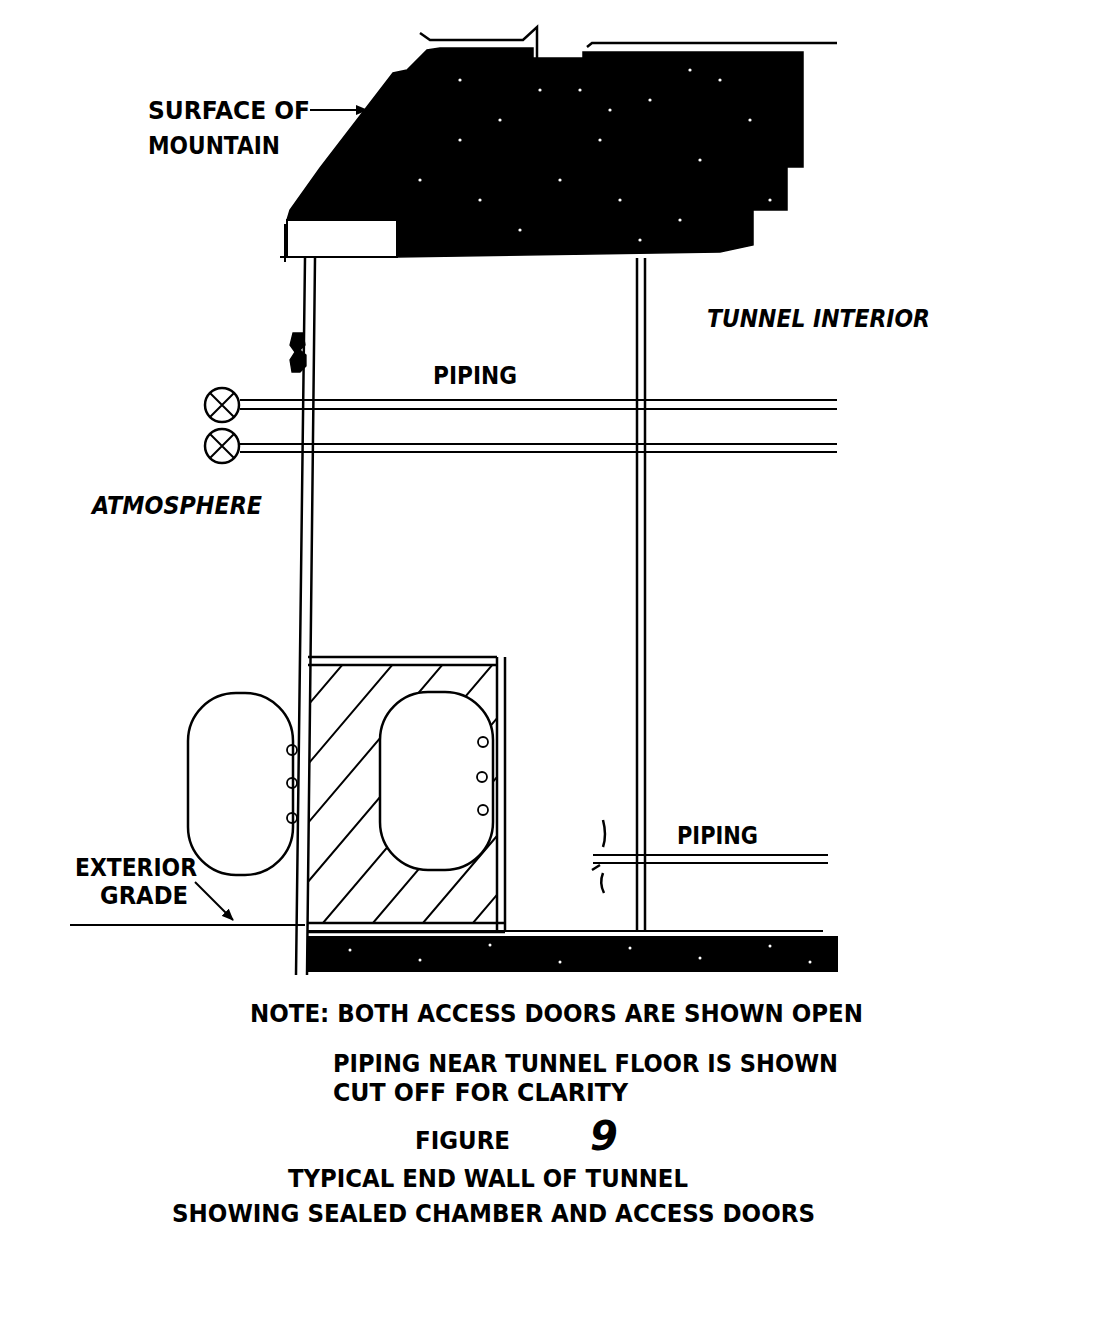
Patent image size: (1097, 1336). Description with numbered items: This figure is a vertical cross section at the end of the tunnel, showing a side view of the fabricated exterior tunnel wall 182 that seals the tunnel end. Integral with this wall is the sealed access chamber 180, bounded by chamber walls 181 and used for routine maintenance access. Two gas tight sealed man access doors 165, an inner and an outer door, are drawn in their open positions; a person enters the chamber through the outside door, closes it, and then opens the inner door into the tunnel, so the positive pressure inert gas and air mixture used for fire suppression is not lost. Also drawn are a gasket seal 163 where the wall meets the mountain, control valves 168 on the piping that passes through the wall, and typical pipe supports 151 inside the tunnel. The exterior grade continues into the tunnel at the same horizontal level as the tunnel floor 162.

The control valves 168 is at (203, 437).
The gasket seal 163 is at (318, 352).
The fabricated exterior tunnel wall 182 is at (318, 507).
The typical pipe supports 151 is at (647, 518).
The sealed man access doors 165 is at (397, 708).
The chamber walls 181 is at (408, 653).
The sealed access chamber 180 is at (463, 887).
The tunnel floor 162 is at (682, 920).